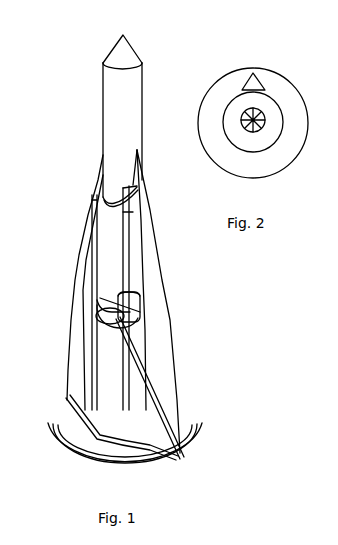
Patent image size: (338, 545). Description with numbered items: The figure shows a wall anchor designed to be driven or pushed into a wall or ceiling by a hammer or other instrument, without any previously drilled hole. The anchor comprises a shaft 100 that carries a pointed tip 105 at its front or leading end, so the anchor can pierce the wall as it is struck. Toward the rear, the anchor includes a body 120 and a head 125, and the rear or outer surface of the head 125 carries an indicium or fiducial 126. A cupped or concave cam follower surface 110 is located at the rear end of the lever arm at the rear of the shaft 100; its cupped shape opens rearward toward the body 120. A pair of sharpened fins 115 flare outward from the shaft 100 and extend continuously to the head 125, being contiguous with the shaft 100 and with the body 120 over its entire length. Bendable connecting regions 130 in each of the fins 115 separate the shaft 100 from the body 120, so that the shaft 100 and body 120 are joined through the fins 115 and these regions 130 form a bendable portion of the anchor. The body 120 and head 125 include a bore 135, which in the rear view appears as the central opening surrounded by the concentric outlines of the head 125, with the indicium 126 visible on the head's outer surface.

In FIG. 1, the shaft 100 is at (103, 133).
In FIG. 1, the pointed tip 105 is at (106, 49).
In FIG. 1, the first cam follower surface 110 is at (140, 313).
In FIG. 2, the first cam follower surface 110 is at (245, 112).
In FIG. 1, the fins 115 is at (77, 342).
In FIG. 1, the body 120 is at (183, 458).
In FIG. 1, the head 125 is at (202, 432).
In FIG. 2, the head 125 is at (223, 170).
In FIG. 2, the indicium 126 is at (257, 73).
In FIG. 1, the bendable connecting regions 130 is at (68, 265).
In FIG. 2, the bore 135 is at (262, 107).